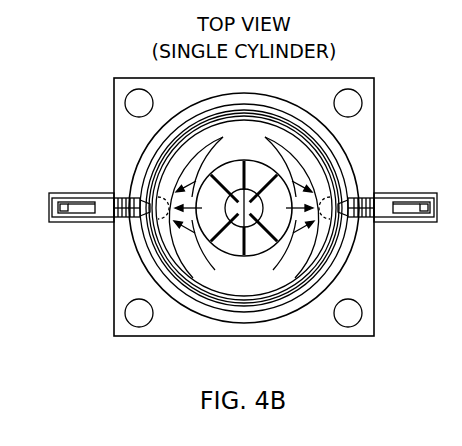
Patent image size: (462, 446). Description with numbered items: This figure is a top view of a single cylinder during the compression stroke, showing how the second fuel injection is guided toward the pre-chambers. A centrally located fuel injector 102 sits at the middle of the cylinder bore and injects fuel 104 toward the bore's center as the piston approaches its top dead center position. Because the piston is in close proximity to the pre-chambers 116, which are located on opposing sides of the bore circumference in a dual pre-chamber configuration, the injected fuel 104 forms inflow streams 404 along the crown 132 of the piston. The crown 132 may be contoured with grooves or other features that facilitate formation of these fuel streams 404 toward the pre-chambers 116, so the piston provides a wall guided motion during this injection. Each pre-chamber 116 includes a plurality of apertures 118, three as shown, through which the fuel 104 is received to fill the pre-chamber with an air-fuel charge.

The fuel injector 102 is at (248, 238).
The fuel 104 is at (240, 250).
The pre-chambers 116 is at (143, 200).
The apertures 118 is at (150, 220).
The crown 132 is at (165, 165).
The inflow streams 404 is at (172, 166).